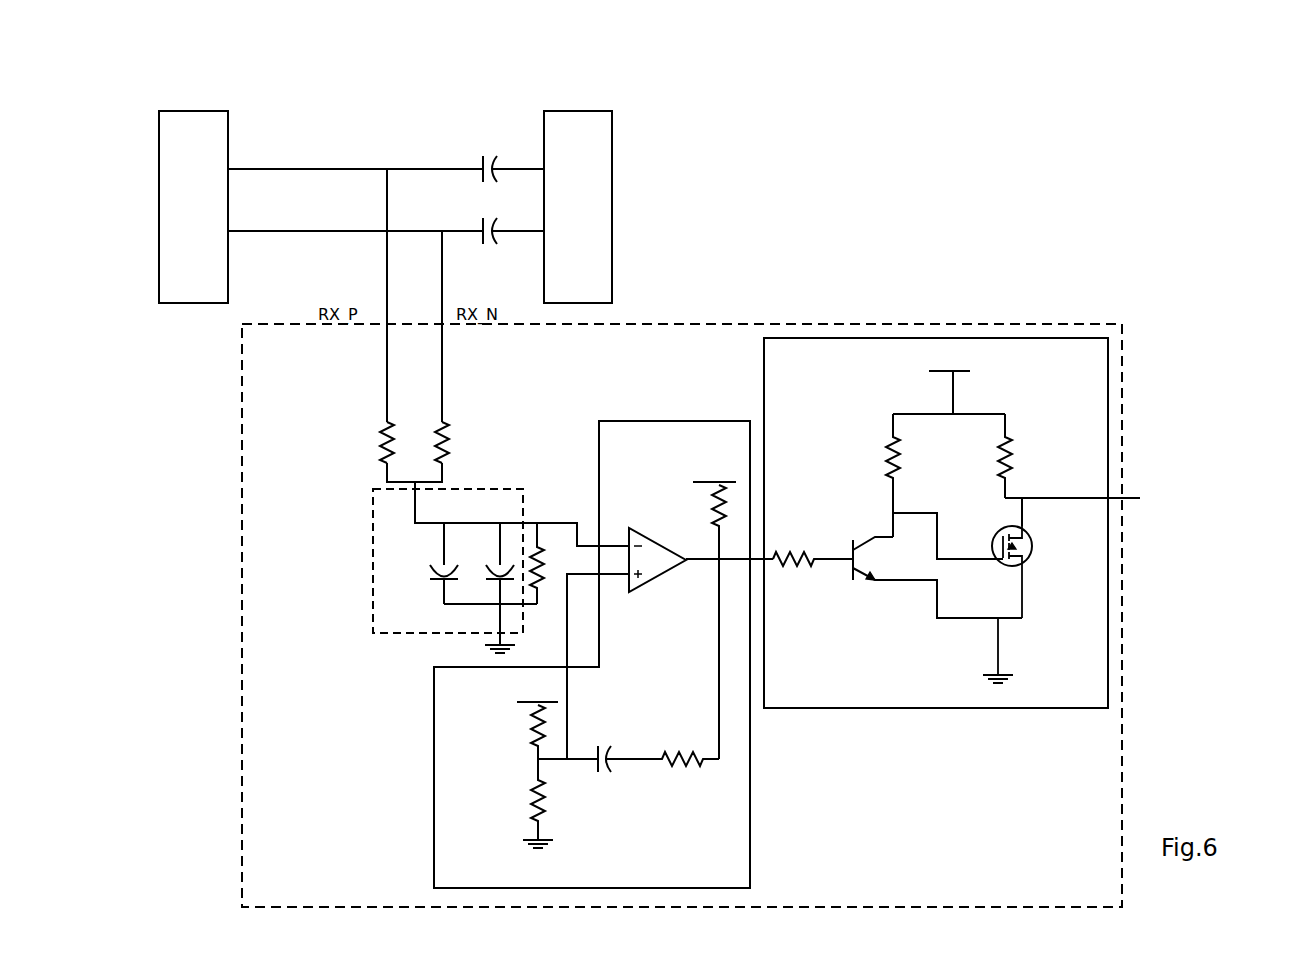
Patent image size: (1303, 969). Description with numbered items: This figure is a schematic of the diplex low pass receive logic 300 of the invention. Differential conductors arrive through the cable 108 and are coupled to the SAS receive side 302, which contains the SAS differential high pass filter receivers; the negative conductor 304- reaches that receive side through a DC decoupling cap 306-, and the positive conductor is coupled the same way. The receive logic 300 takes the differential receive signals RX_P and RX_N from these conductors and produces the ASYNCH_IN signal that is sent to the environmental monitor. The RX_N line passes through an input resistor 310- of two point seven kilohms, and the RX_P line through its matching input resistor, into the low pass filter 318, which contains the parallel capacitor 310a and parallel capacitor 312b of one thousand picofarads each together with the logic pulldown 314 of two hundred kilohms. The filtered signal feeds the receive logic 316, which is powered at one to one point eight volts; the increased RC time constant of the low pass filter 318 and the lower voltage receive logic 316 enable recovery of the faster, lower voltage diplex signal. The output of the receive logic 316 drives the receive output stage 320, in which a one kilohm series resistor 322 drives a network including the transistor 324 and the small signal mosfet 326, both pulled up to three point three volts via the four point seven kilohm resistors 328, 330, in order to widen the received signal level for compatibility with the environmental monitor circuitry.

The cable 108 is at (203, 104).
The SAS receive side 302 is at (612, 206).
The differential conductor 304- is at (263, 226).
The DC decoupling cap 306- is at (518, 283).
The diplex low pass receive logic 300 is at (888, 318).
The input resistor 310- is at (447, 420).
The low pass filter 318 is at (365, 543).
The parallel capacitor 310a is at (435, 560).
The parallel capacitor 312b is at (490, 586).
The logic pulldown 314 is at (545, 586).
The receive logic 316 is at (667, 420).
The receive output stage 320 is at (1012, 347).
The series resistor 322 is at (777, 573).
The transistor 324 is at (858, 587).
The small signal mosfet 326 is at (1023, 575).
The pull-up resistor 328 is at (876, 448).
The pull-up resistor 330 is at (985, 448).